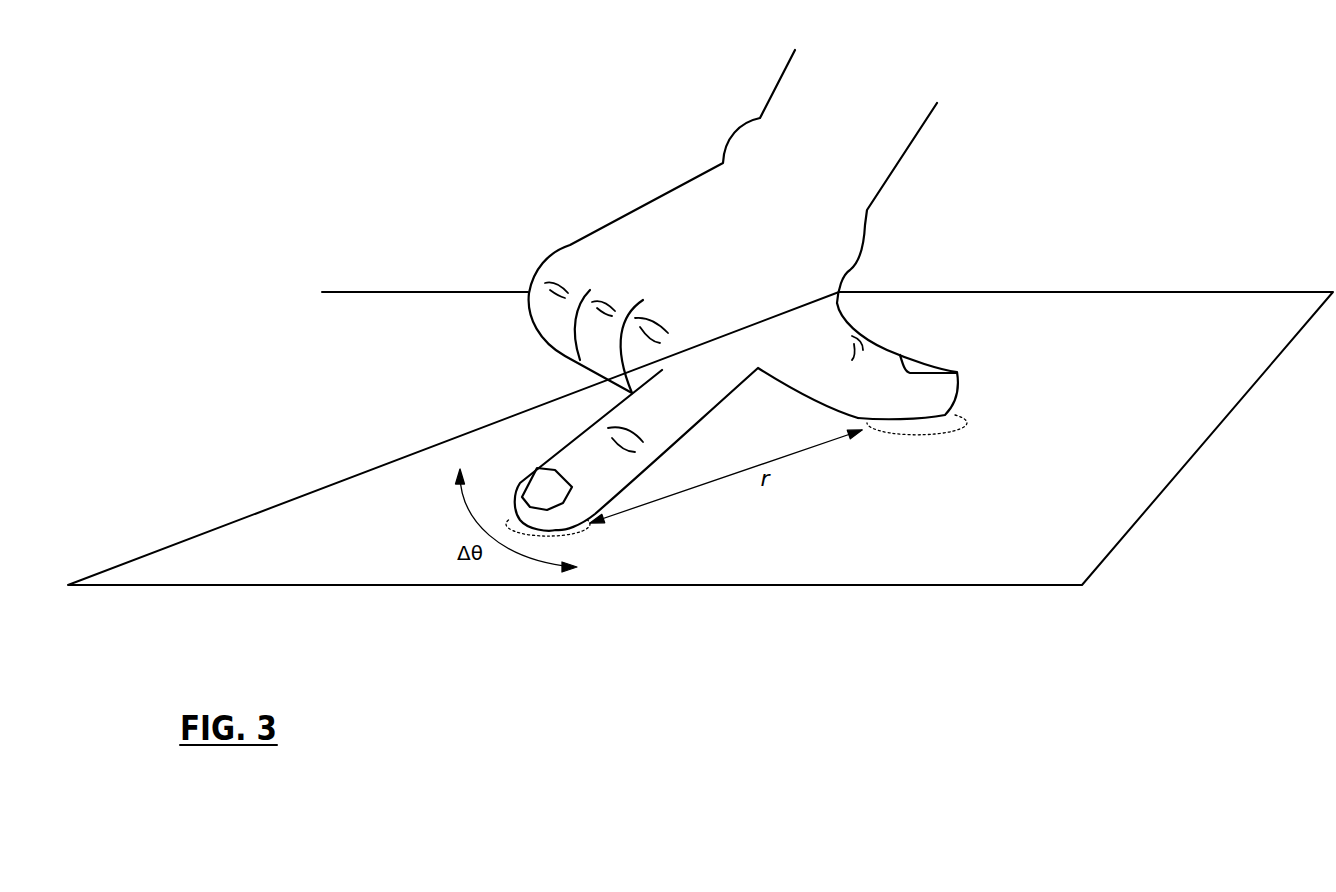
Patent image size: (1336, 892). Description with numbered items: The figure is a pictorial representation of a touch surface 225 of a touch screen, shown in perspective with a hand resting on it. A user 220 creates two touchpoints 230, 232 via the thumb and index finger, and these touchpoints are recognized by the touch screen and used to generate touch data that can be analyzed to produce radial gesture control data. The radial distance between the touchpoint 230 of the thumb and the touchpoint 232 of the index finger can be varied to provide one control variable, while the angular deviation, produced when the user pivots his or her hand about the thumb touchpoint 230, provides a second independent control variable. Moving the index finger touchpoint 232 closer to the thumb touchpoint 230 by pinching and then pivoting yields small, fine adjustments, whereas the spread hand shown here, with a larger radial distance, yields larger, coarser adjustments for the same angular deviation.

The user 220 is at (757, 251).
The touch surface 225 is at (254, 545).
The touchpoint 230 is at (915, 435).
The touchpoint 232 is at (586, 525).